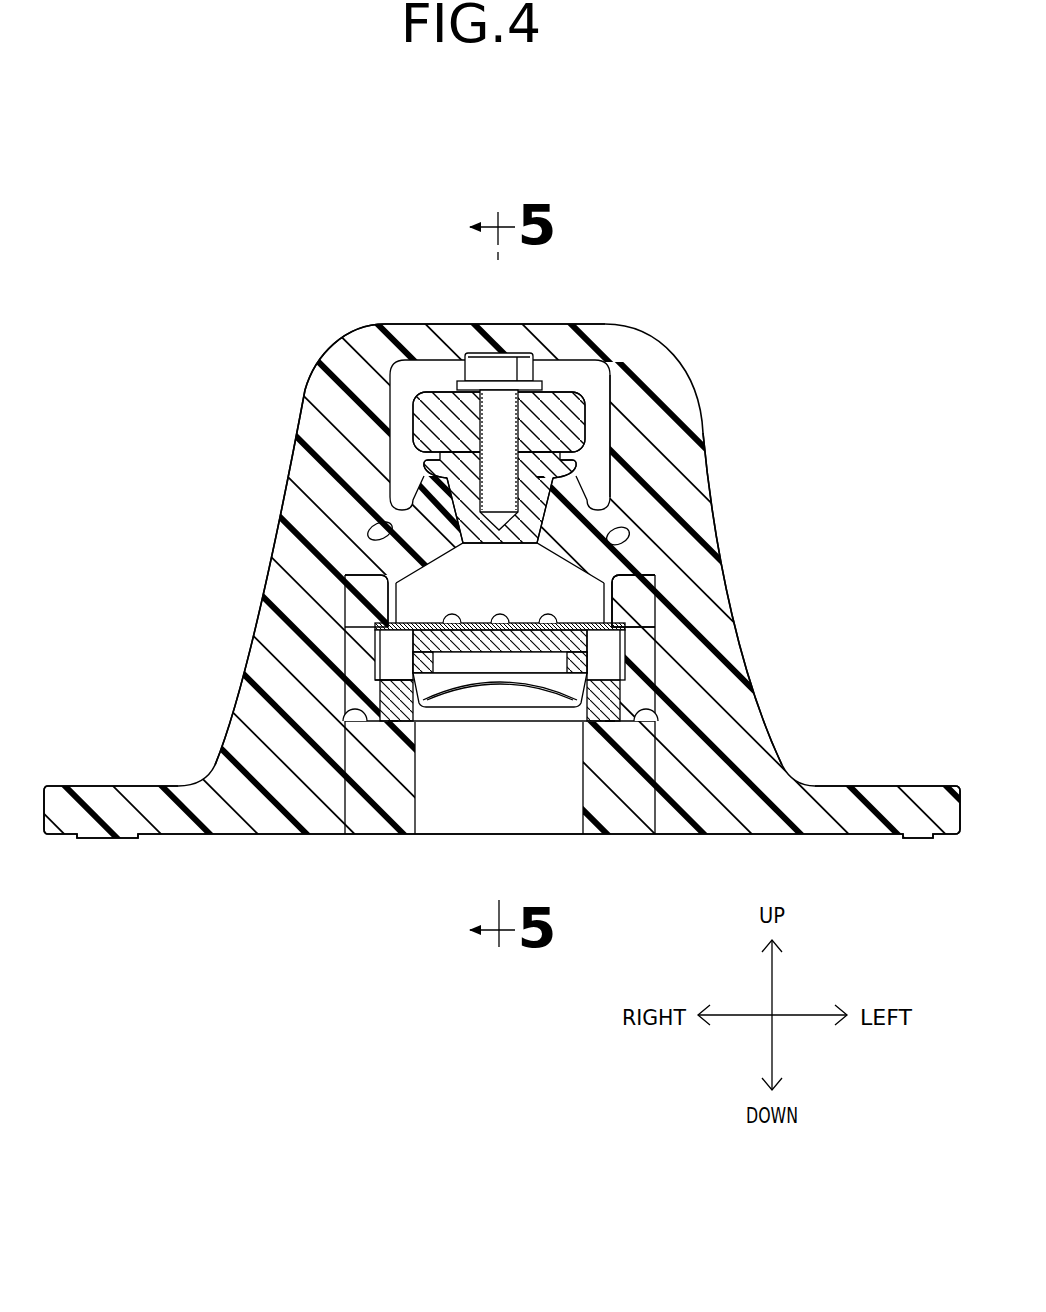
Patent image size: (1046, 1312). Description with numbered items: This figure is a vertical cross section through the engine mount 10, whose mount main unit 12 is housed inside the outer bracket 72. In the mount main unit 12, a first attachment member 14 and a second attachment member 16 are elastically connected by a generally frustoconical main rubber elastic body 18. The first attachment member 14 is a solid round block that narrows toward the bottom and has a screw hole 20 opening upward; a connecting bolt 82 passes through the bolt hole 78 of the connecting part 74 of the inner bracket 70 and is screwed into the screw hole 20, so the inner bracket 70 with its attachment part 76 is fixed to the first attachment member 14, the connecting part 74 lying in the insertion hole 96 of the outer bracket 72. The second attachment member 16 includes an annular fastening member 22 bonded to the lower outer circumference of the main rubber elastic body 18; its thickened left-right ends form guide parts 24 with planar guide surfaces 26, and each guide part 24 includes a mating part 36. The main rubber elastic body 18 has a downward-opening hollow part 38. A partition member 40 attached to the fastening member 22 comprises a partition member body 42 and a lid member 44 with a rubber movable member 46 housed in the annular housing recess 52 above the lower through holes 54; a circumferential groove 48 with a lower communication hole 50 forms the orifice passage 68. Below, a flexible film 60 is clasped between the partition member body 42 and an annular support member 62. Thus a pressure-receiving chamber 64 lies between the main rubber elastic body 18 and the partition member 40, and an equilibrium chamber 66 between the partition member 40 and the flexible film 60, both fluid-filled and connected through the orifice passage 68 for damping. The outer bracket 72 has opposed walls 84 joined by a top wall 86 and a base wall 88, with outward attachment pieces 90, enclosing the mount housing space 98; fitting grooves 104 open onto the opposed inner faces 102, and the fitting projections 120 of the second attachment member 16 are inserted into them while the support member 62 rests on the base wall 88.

The engine mount 10 is at (738, 326).
The mount main unit 12 is at (417, 476).
The first attachment member 14 is at (566, 540).
The second attachment member 16 is at (636, 672).
The main rubber elastic body 18 is at (556, 486).
The screw hole 20 is at (470, 456).
The fastening member 22 is at (644, 612).
The guide part 24 is at (380, 594).
The guide surface 26 is at (346, 616).
The mating part 36 is at (500, 601).
The hollow part 38 is at (634, 598).
The partition member 40 is at (372, 646).
The partition member body 42 is at (382, 668).
The lid member 44 is at (467, 626).
The movable member 46 is at (530, 627).
The circumferential groove 48 is at (588, 627).
The lower communication hole 50 is at (408, 676).
The housing recess 52 is at (440, 630).
The lower through hole 54 is at (459, 652).
The flexible film 60 is at (507, 684).
The support member 62 is at (396, 700).
The pressure-receiving chamber 64 is at (500, 591).
The equilibrium chamber 66 is at (567, 688).
The orifice passage 68 is at (600, 648).
The inner bracket 70 is at (598, 382).
The outer bracket 72 is at (356, 332).
The connecting part 74 is at (554, 408).
The attachment part 76 is at (660, 412).
The bolt hole 78 is at (492, 374).
The connecting bolt 82 is at (506, 372).
The opposed wall 84 is at (308, 605).
The top wall 86 is at (428, 342).
The base wall 88 is at (603, 800).
The attachment piece 90 is at (105, 808).
The insertion hole 96 is at (408, 500).
The mount housing space 98 is at (420, 523).
The opposed inner face 102 is at (382, 536).
The fitting groove 104 is at (350, 718).
The fitting projection 120 is at (393, 728).